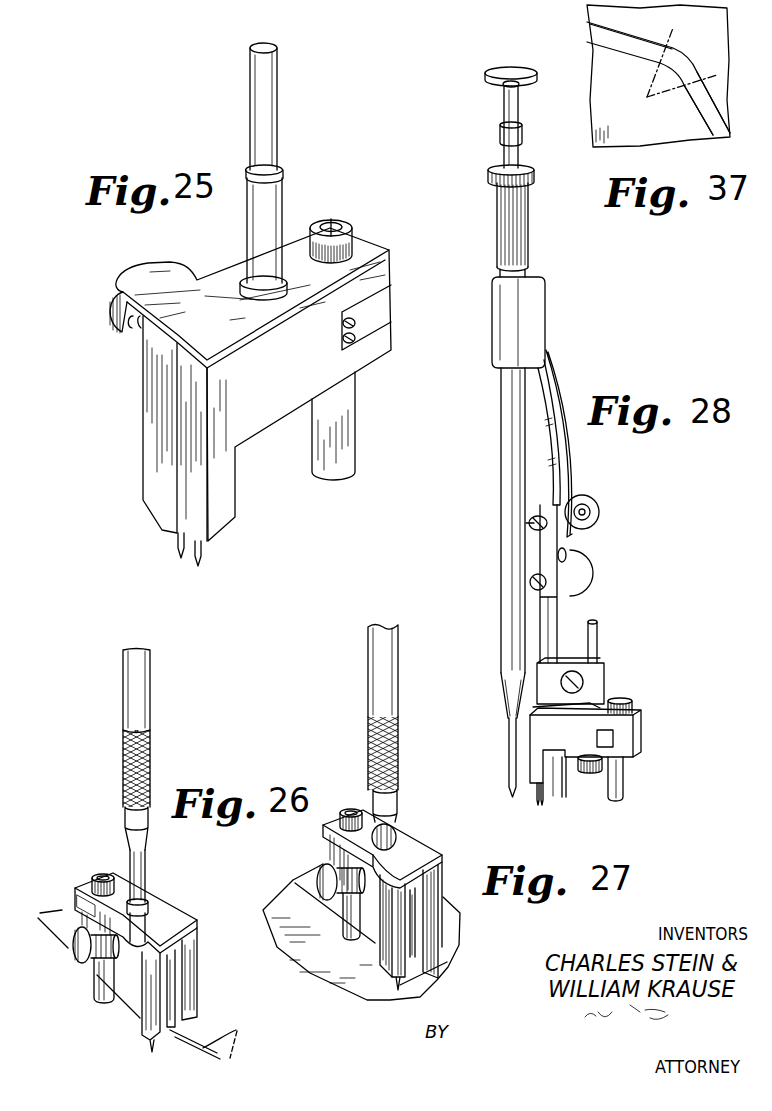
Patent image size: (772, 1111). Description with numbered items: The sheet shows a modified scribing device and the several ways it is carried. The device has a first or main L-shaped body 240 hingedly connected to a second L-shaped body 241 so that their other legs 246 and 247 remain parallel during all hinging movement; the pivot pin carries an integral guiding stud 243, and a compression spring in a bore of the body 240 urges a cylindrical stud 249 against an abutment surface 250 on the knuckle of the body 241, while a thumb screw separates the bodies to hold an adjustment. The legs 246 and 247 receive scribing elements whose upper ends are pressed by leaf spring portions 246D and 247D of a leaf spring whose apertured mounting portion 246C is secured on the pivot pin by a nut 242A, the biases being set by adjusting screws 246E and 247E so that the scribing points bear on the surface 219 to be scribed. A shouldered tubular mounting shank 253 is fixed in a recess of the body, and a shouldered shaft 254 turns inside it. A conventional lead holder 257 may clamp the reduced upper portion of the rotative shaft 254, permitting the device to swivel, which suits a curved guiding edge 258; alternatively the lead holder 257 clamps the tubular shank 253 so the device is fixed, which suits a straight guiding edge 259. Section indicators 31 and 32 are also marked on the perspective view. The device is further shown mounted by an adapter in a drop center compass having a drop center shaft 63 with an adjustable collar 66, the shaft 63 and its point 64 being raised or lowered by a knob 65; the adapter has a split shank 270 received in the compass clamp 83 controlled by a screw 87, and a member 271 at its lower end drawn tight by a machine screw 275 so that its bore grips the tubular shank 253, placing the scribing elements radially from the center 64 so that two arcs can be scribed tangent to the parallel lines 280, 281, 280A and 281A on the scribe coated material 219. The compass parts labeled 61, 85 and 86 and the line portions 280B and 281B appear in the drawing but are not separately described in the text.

In FIG. 25, the first L-shaped body 240 is at (268, 410).
In FIG. 28, the first L-shaped body 240 is at (540, 737).
In FIG. 26, the first L-shaped body 240 is at (197, 930).
In FIG. 27, the first L-shaped body 240 is at (440, 872).
In FIG. 25, the shouldered shaft 254 is at (270, 128).
In FIG. 28, the shouldered shaft 254 is at (597, 640).
In FIG. 25, the abutment surface 250 is at (373, 302).
In FIG. 25, the cylindrical stud 249 is at (350, 337).
In FIG. 25, the section line 31- 31 is at (364, 206).
In FIG. 25, the section line 32- 32 is at (340, 330).
In FIG. 37, the scribe coated material 219 is at (623, 137).
In FIG. 26, the scribe coated material 219 is at (141, 1067).
In FIG. 27, the scribe coated material 219 is at (367, 990).
In FIG. 37, the parallel line 280 is at (627, 53).
In FIG. 37, the parallel line 281 is at (640, 42).
In FIG. 37, the groove portion 280B is at (679, 55).
In FIG. 37, the line portion 281B is at (686, 67).
In FIG. 37, the parallel line 280A is at (690, 103).
In FIG. 37, the parallel line 281A is at (713, 135).
In FIG. 28, the knob 65 is at (532, 73).
In FIG. 28, the collar 66 is at (522, 132).
In FIG. 28, the drop center shaft 63 is at (520, 165).
In FIG. 28, the barrel 61 is at (535, 322).
In FIG. 28, the point 64 is at (512, 794).
In FIG. 28, the spring arm 86 is at (553, 408).
In FIG. 28, the arm 85 is at (548, 457).
In FIG. 28, the clamp 83 is at (567, 548).
In FIG. 28, the screw 87 is at (582, 571).
In FIG. 28, the split shank 270 is at (557, 613).
In FIG. 28, the member 271 is at (604, 670).
In FIG. 28, the machine screw 275 is at (560, 680).
In FIG. 28, the leaf spring portion 247D is at (587, 700).
In FIG. 27, the leaf spring portion 247D is at (407, 873).
In FIG. 28, the leaf spring portion 246D is at (531, 712).
In FIG. 27, the leaf spring portion 246D is at (427, 850).
In FIG. 28, the adjusting screw 247E is at (587, 773).
In FIG. 28, the adjusting screw 246E is at (564, 770).
In FIG. 28, the leg 247 is at (552, 762).
In FIG. 28, the leg 246 is at (536, 775).
In FIG. 28, the guiding stud 243 is at (625, 793).
In FIG. 26, the guiding stud 243 is at (105, 990).
In FIG. 27, the guiding stud 243 is at (343, 922).
In FIG. 26, the lead holder 257 is at (137, 708).
In FIG. 27, the lead holder 257 is at (385, 670).
In FIG. 26, the shouldered tubular mounting shank 253 is at (142, 876).
In FIG. 26, the second L-shaped body 241 is at (120, 958).
In FIG. 27, the second L-shaped body 241 is at (343, 856).
In FIG. 26, the curved guiding edge 258 is at (236, 1033).
In FIG. 27, the nut 242A is at (352, 808).
In FIG. 27, the apertured mounting portion 246C is at (340, 828).
In FIG. 27, the straight guiding edge 259 is at (445, 958).